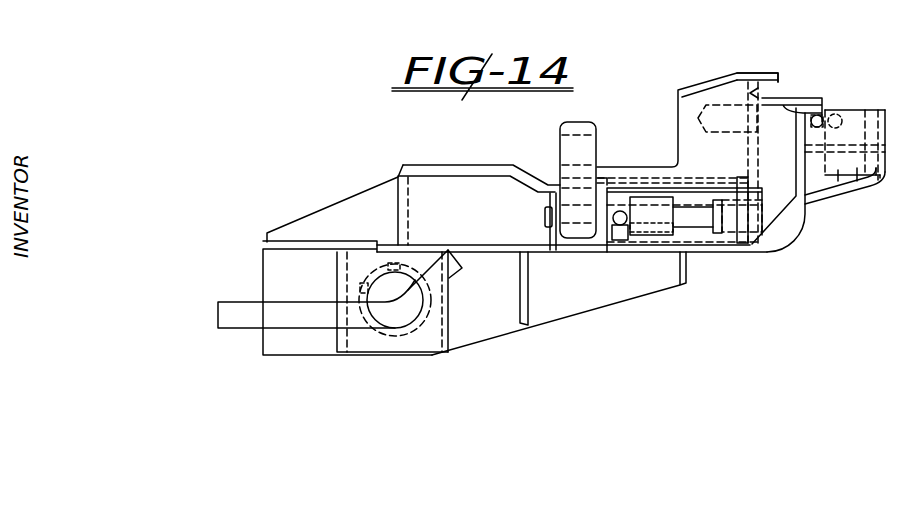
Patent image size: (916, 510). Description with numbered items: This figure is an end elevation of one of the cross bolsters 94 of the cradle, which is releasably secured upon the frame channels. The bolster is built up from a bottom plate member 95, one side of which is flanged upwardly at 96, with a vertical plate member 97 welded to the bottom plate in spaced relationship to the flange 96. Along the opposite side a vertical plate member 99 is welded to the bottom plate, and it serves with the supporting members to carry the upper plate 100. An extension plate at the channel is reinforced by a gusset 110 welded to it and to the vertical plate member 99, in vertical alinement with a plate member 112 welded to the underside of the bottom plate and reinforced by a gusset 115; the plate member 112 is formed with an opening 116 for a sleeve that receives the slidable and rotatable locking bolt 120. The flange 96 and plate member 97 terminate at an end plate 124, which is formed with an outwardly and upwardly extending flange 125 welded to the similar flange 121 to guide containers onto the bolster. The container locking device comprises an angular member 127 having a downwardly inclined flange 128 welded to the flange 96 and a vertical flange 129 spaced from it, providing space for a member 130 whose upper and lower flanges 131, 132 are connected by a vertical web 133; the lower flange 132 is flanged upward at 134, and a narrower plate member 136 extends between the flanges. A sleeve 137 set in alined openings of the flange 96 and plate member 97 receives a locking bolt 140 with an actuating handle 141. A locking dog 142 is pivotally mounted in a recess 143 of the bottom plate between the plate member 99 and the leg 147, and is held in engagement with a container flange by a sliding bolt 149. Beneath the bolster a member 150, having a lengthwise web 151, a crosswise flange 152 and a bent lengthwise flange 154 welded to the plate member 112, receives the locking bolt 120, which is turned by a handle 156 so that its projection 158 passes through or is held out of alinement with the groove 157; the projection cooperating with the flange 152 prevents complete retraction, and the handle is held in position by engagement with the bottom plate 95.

The cross bolster 94 is at (798, 243).
The bottom plate member 95 is at (770, 253).
The flange 96 is at (799, 165).
The vertical plate member 97 is at (752, 161).
The vertical plate member 99 is at (436, 183).
The upper plate 100 is at (490, 172).
The gusset 110 is at (357, 205).
The plate member 112 is at (595, 298).
The gusset 115 is at (525, 320).
The opening 116 is at (378, 332).
The locking bolt 120 is at (368, 296).
The flange 121 is at (764, 92).
The end plate 124 is at (683, 107).
The flange 125 is at (723, 79).
The angular member 127 is at (886, 186).
The flange 128 is at (871, 190).
The vertical flange 129 is at (886, 133).
The member 130 is at (888, 110).
The upper flange 131 is at (888, 146).
The lower flange 132 is at (858, 190).
The vertical web 133 is at (878, 165).
The upward flange 134 is at (840, 168).
The plate member 136 is at (856, 122).
The sleeve 137 is at (818, 114).
The locking bolt 140 is at (725, 130).
The actuating handle 141 is at (829, 110).
The locking dog 142 is at (582, 131).
The recess 143 is at (553, 204).
The leg 147 is at (606, 236).
The sliding bolt 149 is at (692, 218).
The member 150 is at (452, 335).
The web 151 is at (452, 312).
The flange 152 is at (400, 342).
The flange 154 is at (345, 288).
The handle 156 is at (223, 315).
The groove 157 is at (396, 265).
The projection 158 is at (368, 283).